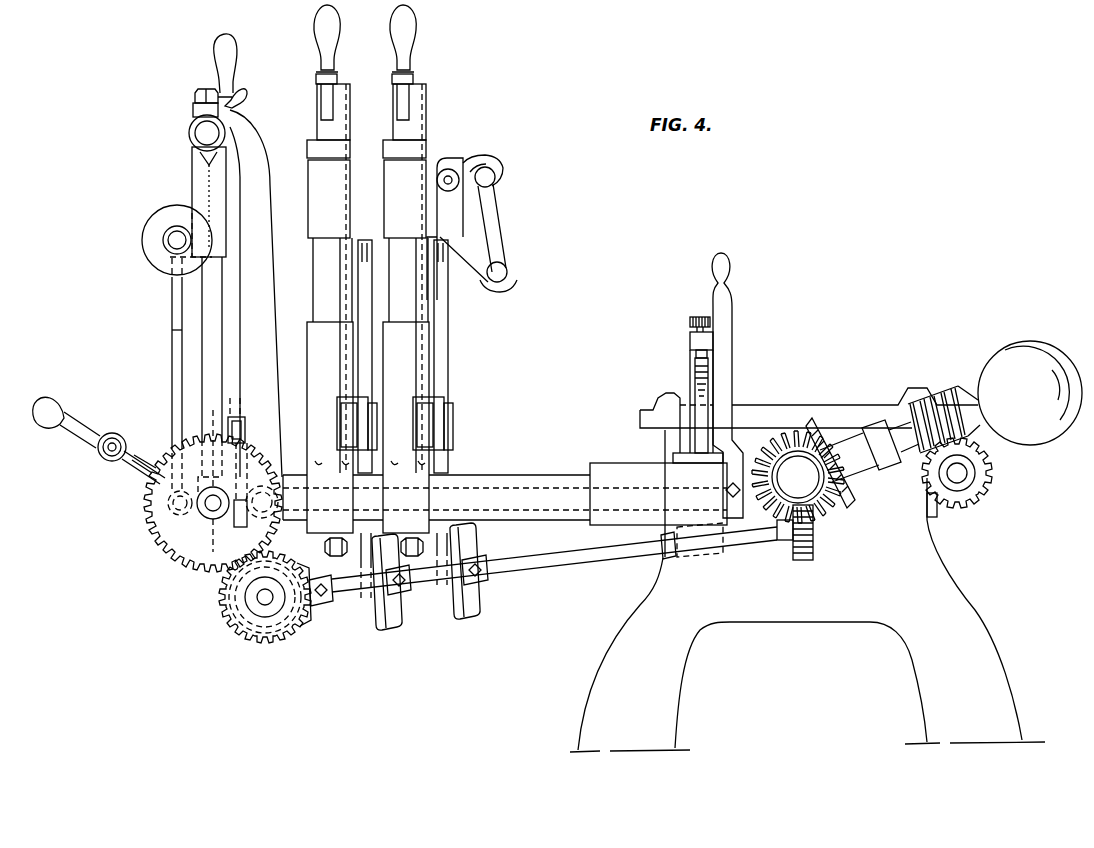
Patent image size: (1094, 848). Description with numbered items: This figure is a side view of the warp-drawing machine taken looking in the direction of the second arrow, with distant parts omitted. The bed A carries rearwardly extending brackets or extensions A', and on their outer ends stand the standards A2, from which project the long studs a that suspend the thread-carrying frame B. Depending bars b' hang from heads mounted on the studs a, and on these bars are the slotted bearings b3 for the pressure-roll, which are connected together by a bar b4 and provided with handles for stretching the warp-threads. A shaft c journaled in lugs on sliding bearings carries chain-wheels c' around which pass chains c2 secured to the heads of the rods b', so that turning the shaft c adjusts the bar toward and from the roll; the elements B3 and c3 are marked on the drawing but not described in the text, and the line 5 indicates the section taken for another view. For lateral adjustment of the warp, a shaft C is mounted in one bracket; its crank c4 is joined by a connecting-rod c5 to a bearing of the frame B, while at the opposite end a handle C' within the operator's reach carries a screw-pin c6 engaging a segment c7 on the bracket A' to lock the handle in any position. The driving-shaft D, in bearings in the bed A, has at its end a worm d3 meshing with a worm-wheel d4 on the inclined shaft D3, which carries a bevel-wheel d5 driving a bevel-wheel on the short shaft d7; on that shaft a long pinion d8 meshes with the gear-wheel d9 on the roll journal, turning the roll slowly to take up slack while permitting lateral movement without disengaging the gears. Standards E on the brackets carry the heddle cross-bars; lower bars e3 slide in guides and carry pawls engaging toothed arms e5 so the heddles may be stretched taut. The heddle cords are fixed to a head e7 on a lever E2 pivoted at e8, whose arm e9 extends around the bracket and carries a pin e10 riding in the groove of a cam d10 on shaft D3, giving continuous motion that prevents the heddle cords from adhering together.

The bed A is at (807, 595).
The brackets or extensions A' is at (630, 472).
The standards A2 is at (256, 293).
The thread-carrying frame B is at (160, 375).
The wing nut B3 is at (225, 79).
The shaft C is at (521, 500).
The handle C' is at (731, 385).
The driving-shaft D is at (798, 477).
The shaft D3 is at (554, 559).
The standards E is at (368, 427).
The lever E2 is at (441, 362).
The long studs a is at (207, 127).
The depending bars b' is at (210, 375).
The slotted bearings b3 is at (131, 458).
The bar b4 is at (88, 422).
The shaft c is at (177, 240).
The chain-wheels c' is at (182, 243).
The chains c2 is at (209, 202).
The rod c3 is at (171, 336).
The crank c4 is at (245, 425).
The connecting-rod c5 is at (237, 454).
The screw-pin c6 is at (700, 321).
The segment c7 is at (695, 366).
The worm d3 is at (944, 436).
The worm-wheel d4 is at (795, 553).
The bevel-wheel d5 is at (321, 603).
The short shaft d7 is at (265, 597).
The long pinion d8 is at (265, 607).
The gear-wheel d9 is at (213, 503).
The cams d10 is at (433, 576).
The bars e3 is at (383, 423).
The toothed arms e5 is at (420, 286).
The head e7 is at (472, 227).
The pivot e8 is at (422, 426).
The arm e9 is at (383, 551).
The pins e10 is at (407, 571).
The center line 5 is at (214, 480).